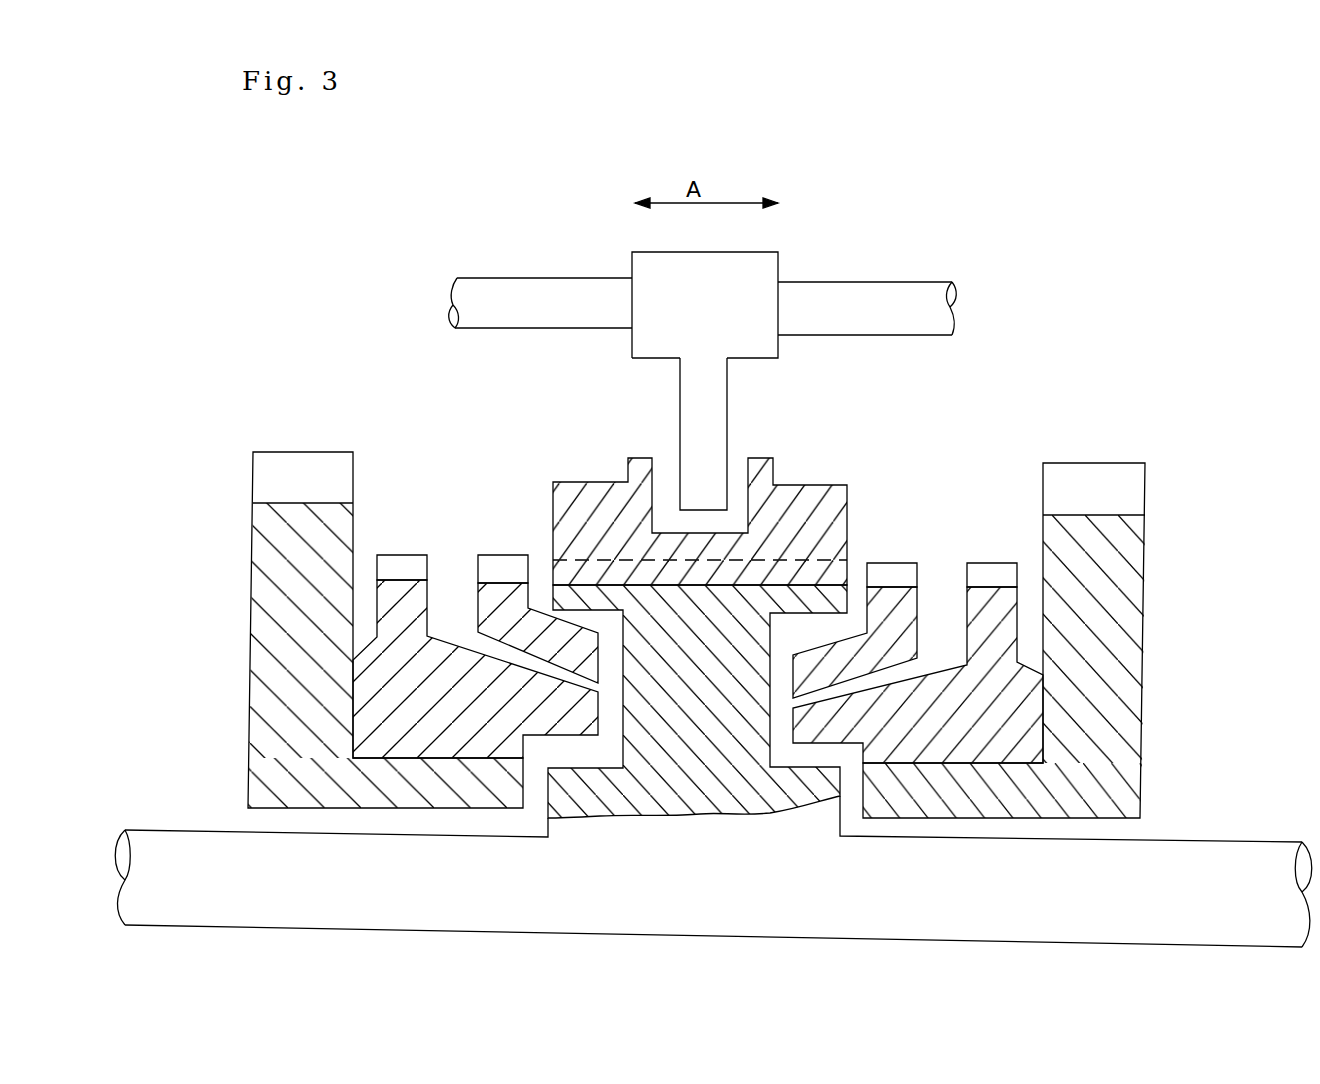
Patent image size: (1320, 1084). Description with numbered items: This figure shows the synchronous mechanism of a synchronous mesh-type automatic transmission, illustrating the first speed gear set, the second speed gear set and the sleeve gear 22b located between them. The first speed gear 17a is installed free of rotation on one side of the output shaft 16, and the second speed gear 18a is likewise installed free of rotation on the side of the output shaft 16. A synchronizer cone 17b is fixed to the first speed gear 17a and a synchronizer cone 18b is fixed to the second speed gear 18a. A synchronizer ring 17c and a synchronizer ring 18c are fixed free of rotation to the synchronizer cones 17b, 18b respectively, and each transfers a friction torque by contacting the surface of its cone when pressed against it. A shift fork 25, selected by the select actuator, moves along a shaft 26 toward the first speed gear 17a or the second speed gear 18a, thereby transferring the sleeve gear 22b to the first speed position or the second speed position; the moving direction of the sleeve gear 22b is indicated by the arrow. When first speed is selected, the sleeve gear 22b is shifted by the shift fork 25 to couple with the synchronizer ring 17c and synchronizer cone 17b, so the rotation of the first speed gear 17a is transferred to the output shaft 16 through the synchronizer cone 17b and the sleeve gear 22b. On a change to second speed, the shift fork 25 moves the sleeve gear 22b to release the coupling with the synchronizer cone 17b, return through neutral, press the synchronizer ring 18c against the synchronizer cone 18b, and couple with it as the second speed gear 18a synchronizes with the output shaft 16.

The output shaft 16 is at (1165, 850).
The 1st speed gear 17a is at (1080, 463).
The synchronizer cone 17b is at (987, 565).
The synchronizer ring 17c is at (793, 655).
The 2nd speed gear 18a is at (253, 463).
The synchronizer cone 18b is at (401, 565).
The synchronizer ring 18c is at (503, 565).
The sleeve gear 22b is at (847, 505).
The shift fork 25 is at (727, 418).
The shaft 26 is at (923, 297).